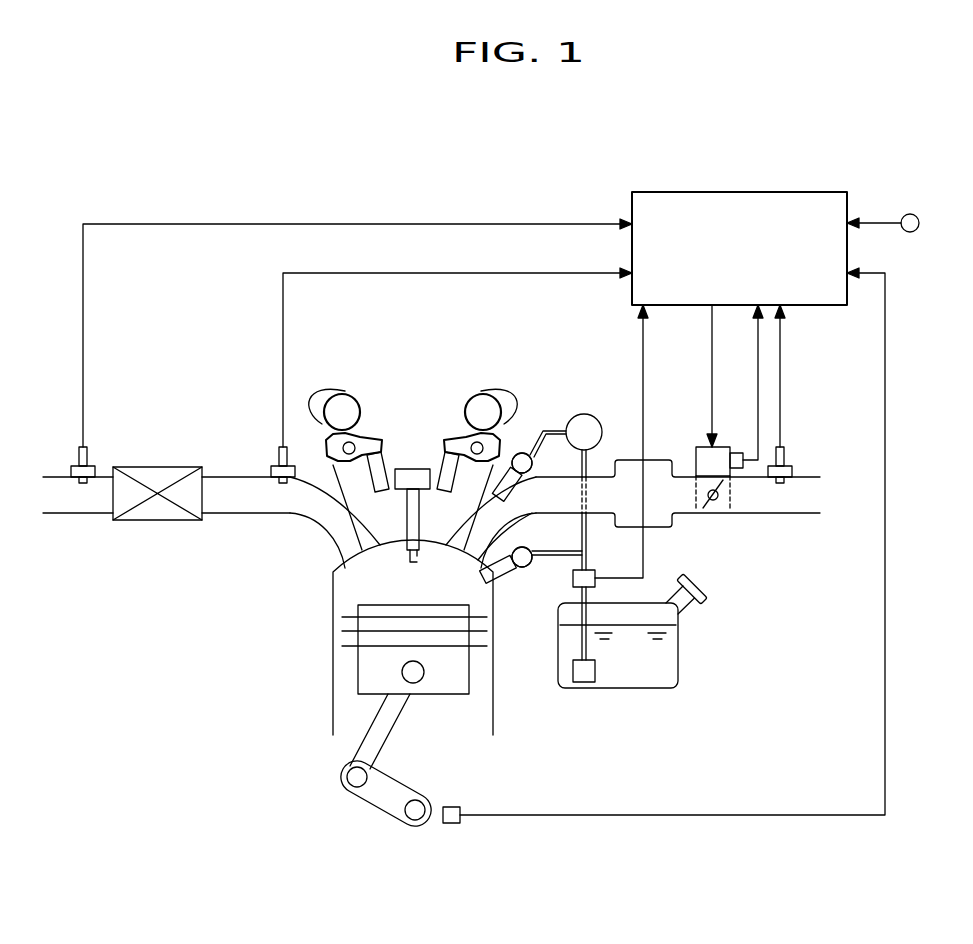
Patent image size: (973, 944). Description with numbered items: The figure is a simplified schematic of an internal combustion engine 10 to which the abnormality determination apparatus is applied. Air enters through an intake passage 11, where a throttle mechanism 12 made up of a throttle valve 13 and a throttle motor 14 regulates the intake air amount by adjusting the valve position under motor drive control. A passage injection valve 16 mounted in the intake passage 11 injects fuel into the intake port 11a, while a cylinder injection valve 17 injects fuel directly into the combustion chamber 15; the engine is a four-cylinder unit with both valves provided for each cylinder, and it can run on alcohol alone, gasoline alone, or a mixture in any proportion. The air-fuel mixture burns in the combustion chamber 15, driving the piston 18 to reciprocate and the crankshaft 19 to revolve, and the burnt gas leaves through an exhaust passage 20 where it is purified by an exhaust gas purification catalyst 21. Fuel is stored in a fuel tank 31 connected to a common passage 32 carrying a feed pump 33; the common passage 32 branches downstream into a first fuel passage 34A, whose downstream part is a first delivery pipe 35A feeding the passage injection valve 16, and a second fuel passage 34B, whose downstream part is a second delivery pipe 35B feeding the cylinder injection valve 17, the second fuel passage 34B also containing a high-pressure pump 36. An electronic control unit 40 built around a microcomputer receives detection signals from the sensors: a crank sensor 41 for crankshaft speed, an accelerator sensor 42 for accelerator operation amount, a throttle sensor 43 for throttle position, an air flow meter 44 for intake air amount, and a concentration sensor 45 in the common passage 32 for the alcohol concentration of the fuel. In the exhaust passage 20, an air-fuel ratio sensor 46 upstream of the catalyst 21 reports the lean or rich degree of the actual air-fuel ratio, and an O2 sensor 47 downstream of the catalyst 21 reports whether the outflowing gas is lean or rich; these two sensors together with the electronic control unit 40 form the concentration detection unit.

The internal combustion engine 10 is at (305, 680).
The intake passage 11 is at (803, 511).
The intake port 11a is at (505, 523).
The throttle mechanism 12 is at (748, 542).
The throttle valve 13 is at (706, 512).
The throttle motor 14 is at (700, 446).
The combustion chamber 15 is at (345, 591).
The passage injection valve 16 is at (512, 488).
The cylinder injection valve 17 is at (478, 578).
The piston 18 is at (450, 698).
The crankshaft 19 is at (417, 793).
The exhaust passage 20 is at (83, 513).
The exhaust gas purification catalyst 21 is at (157, 466).
The fuel tank 31 is at (678, 668).
The common passage 32 is at (590, 558).
The feed pump 33 is at (598, 684).
The first fuel passage 34A is at (556, 427).
The second fuel passage 34B is at (547, 558).
The first delivery pipe 35A is at (522, 452).
The second delivery pipe 35B is at (522, 568).
The high-pressure pump 36 is at (598, 418).
The electronic control unit 40 is at (746, 191).
The crank sensor 41 is at (452, 825).
The accelerator sensor 42 is at (919, 223).
The throttle sensor 43 is at (741, 452).
The air flow meter 44 is at (796, 466).
The concentration sensor 45 is at (597, 582).
The air-fuel ratio sensor 46 is at (270, 462).
The O2 sensor 47 is at (70, 462).